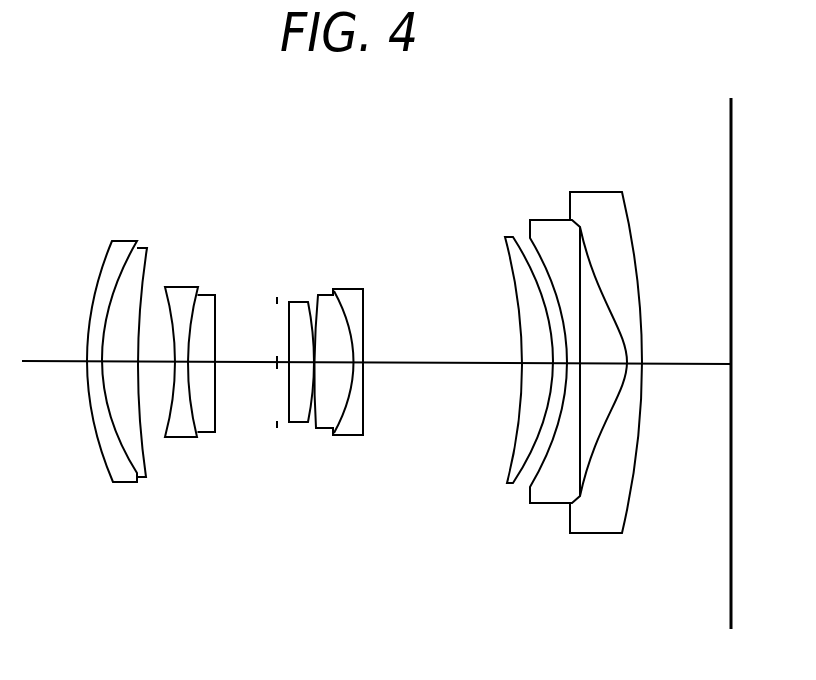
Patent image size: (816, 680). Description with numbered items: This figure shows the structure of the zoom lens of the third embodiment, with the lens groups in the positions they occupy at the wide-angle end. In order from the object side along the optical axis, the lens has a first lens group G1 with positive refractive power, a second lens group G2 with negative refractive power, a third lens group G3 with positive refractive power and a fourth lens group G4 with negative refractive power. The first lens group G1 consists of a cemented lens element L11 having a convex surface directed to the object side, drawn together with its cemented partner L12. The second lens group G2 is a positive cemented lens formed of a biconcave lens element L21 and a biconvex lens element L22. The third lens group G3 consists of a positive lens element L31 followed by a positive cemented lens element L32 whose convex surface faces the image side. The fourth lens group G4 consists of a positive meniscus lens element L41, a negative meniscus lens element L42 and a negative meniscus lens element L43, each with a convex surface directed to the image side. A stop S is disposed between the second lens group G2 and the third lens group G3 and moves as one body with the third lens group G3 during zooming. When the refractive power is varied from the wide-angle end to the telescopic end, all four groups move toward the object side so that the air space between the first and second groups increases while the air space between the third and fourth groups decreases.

The first lens group G1 is at (75, 227).
The second lens group G2 is at (222, 227).
The third lens group G3 is at (363, 227).
The fourth lens group G4 is at (636, 185).
The cemented lens element L11 is at (120, 478).
The second lens of first group L12 is at (142, 477).
The biconcave lens element L21 is at (180, 427).
The biconvex lens element L22 is at (205, 420).
The positive lens element L31 is at (298, 417).
The positive cemented lens element L32 is at (340, 435).
The positive meniscus lens element L41 is at (510, 485).
The negative meniscus lens element L42 is at (550, 495).
The negative meniscus lens element L43 is at (593, 523).
The stop S is at (274, 300).